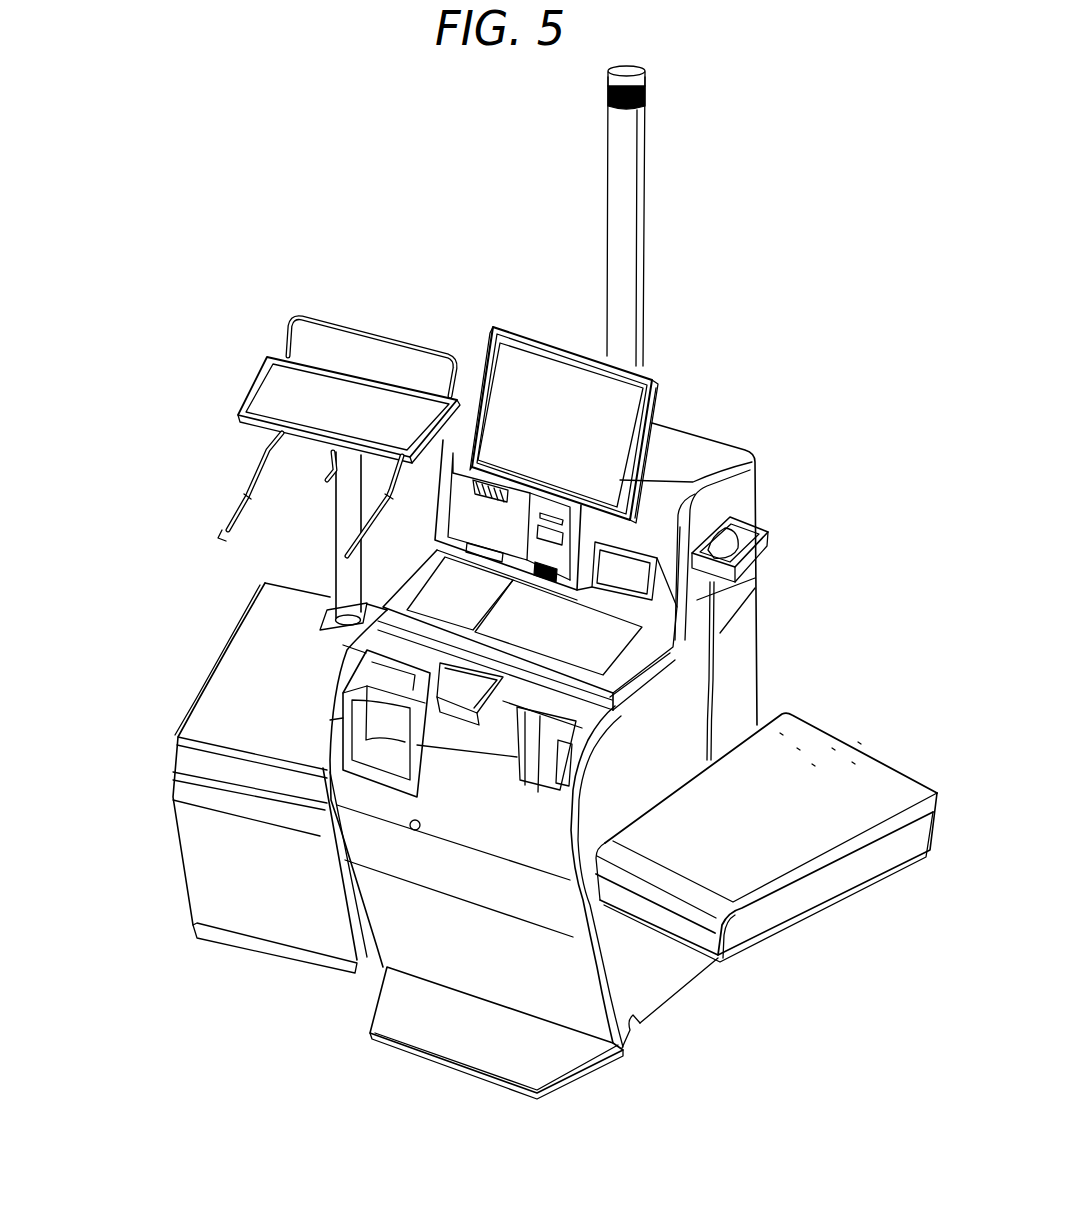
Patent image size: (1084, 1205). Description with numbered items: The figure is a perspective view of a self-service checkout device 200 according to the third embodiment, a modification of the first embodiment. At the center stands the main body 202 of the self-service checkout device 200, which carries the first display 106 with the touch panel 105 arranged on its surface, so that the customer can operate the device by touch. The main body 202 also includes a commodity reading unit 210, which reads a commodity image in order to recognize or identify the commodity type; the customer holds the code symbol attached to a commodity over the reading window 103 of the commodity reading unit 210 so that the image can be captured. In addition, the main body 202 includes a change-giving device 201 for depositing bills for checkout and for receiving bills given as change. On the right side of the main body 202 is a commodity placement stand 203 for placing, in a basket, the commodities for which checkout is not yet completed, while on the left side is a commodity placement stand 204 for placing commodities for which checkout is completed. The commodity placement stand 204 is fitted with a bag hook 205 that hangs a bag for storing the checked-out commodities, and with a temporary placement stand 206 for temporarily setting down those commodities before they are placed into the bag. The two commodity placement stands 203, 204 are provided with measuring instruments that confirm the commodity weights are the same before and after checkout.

The self-service checkout device 200 is at (735, 210).
The first display 106 is at (565, 380).
The touch panel 105 is at (600, 405).
The temporary placement stand 206 is at (368, 403).
The bag hook 205 is at (232, 518).
The change-giving device 201 is at (400, 703).
The reading window 103 is at (630, 640).
The commodity reading unit 210 is at (633, 568).
The commodity placement stand 203 is at (797, 780).
The commodity placement stand 204 is at (273, 727).
The main body 202 is at (653, 997).